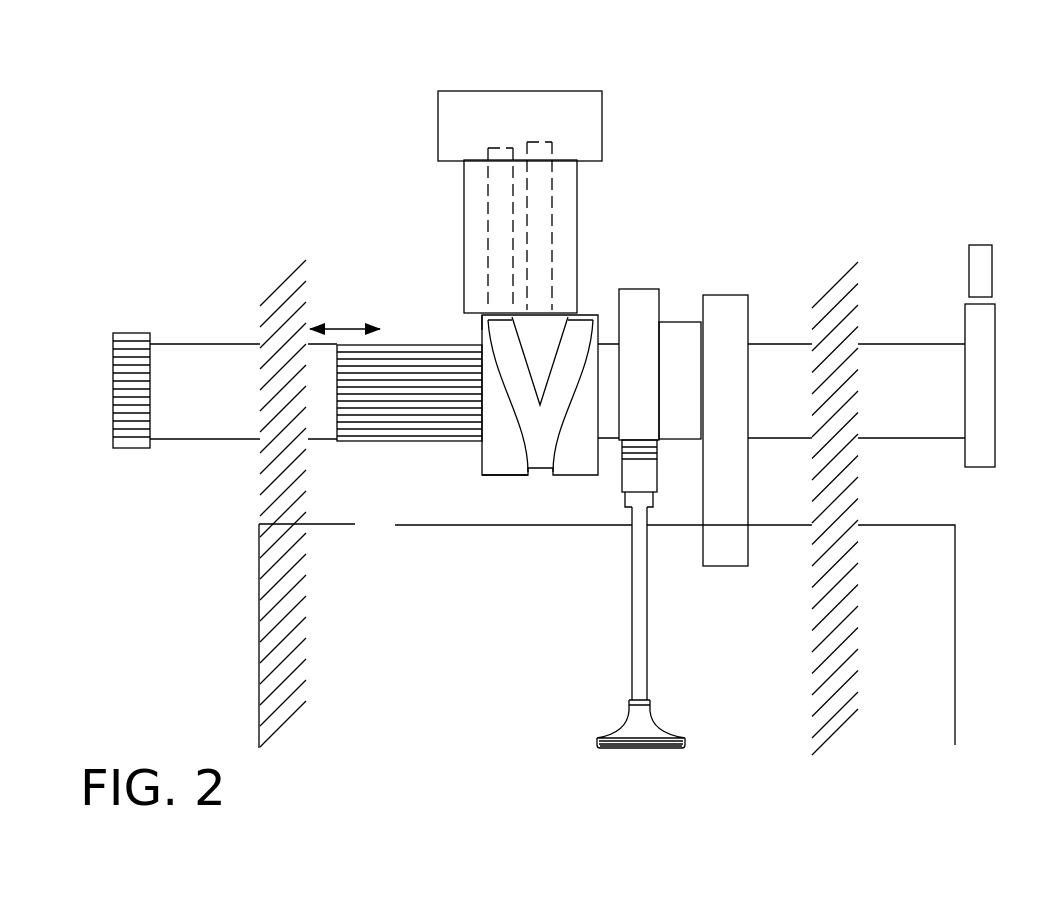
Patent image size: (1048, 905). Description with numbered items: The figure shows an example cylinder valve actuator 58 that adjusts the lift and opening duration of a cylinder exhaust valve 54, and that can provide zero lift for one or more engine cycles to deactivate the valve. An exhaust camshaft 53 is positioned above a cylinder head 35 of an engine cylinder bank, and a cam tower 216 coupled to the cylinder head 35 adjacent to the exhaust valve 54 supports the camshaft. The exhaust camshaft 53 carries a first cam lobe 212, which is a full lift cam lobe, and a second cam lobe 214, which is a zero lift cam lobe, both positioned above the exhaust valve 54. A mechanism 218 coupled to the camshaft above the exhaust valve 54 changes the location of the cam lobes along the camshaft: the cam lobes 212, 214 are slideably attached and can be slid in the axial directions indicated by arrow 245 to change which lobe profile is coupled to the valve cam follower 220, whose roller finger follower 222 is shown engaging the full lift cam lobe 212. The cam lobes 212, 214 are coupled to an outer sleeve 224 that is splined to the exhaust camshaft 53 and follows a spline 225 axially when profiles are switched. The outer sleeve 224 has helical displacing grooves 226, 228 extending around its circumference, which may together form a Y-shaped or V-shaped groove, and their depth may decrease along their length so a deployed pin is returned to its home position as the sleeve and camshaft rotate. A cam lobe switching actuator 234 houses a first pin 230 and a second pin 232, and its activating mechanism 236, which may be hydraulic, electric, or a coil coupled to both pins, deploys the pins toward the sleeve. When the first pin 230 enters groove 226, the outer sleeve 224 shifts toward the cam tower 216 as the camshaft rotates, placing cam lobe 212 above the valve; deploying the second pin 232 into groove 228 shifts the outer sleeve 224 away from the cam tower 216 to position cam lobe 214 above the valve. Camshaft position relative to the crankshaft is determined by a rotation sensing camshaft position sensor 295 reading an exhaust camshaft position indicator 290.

The cylinder head 35 is at (940, 525).
The exhaust camshaft 53 is at (203, 340).
The exhaust valve 54 is at (630, 558).
The cylinder valve actuator 58 is at (710, 343).
The first cam lobe 212 is at (640, 302).
The second cam lobe 214 is at (665, 322).
The cam tower 216 is at (727, 320).
The mechanism 218 is at (467, 332).
The valve cam follower 220 is at (488, 413).
The roller finger follower 222 is at (640, 467).
The outer sleeve 224 is at (505, 462).
The spline 225 is at (380, 442).
The first displacing groove 226 is at (520, 368).
The second displacing groove 228 is at (570, 352).
The first pin 230 is at (498, 207).
The second pin 232 is at (535, 193).
The cam lobe switching actuator 234 is at (476, 169).
The activating mechanism 236 is at (505, 108).
The arrow 245 is at (347, 329).
The exhaust camshaft position indicator 290 is at (995, 375).
The camshaft position sensor 295 is at (982, 245).